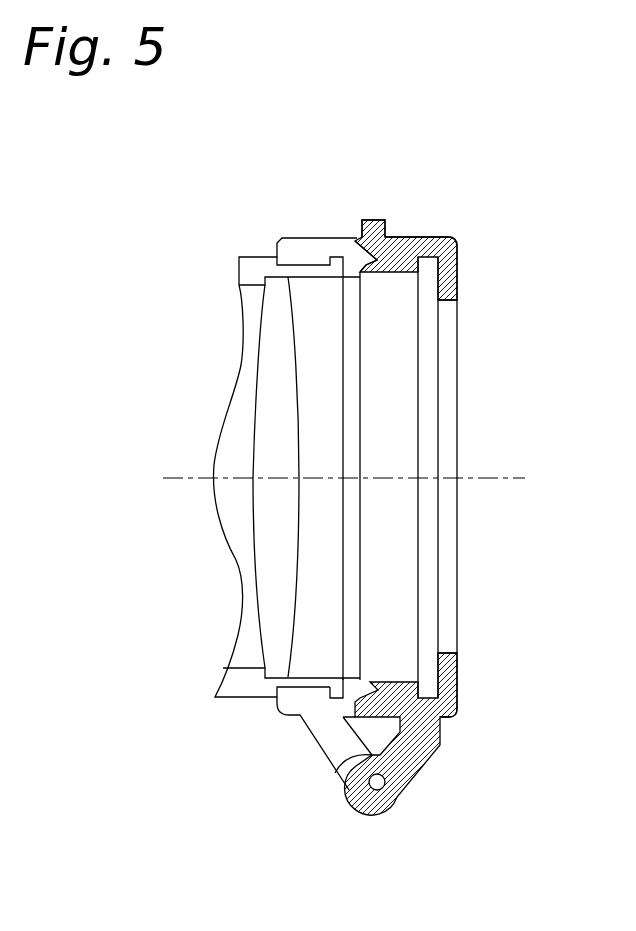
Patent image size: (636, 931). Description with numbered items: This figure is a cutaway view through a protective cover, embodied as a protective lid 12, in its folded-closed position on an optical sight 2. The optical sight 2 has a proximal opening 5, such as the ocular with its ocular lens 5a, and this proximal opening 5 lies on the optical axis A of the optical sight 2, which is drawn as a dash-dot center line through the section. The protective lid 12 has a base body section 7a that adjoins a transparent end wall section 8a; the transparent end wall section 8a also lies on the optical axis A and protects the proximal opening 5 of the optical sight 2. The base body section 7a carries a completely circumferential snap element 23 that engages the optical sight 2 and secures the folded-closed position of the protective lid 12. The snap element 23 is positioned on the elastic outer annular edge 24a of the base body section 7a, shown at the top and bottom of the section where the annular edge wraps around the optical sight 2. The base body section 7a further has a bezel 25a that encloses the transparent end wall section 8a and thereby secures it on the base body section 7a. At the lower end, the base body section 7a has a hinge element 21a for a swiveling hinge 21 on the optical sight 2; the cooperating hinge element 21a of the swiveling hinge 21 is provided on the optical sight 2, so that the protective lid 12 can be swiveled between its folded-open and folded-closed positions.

The optical sight 2 is at (258, 270).
The proximal opening 5 is at (317, 427).
The ocular lens 5a is at (278, 343).
The base body section 7a is at (393, 232).
The transparent end wall section 8a is at (420, 578).
The protective lid 12 is at (480, 428).
The swiveling hinge 21 is at (395, 800).
The hinge element 21a is at (432, 760).
The snap element 23 is at (358, 243).
The elastic outer annular edge 24a is at (425, 232).
The bezel 25a is at (463, 278).
The optical axis A is at (193, 483).